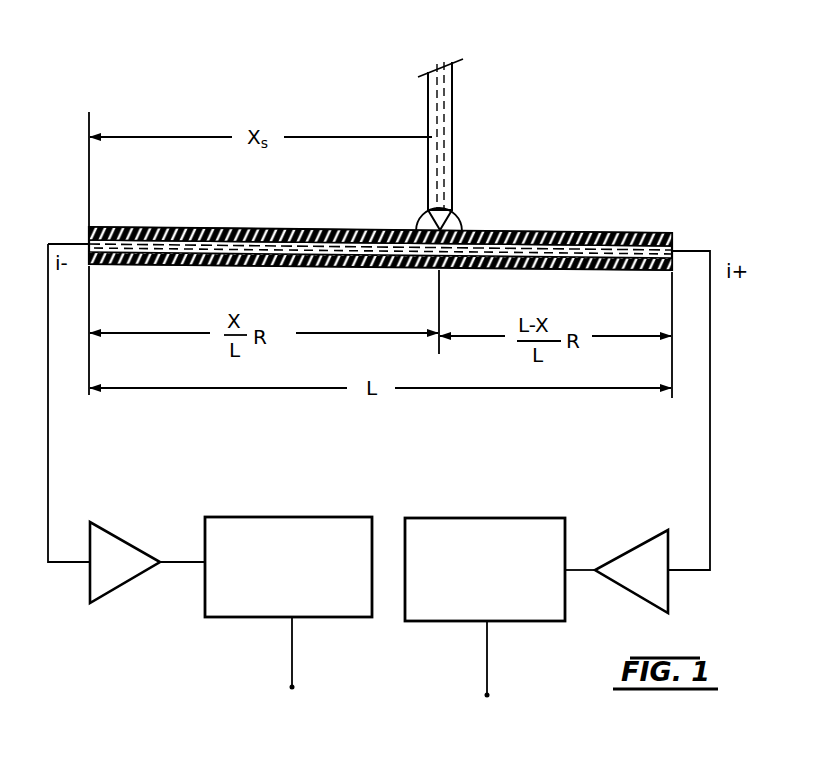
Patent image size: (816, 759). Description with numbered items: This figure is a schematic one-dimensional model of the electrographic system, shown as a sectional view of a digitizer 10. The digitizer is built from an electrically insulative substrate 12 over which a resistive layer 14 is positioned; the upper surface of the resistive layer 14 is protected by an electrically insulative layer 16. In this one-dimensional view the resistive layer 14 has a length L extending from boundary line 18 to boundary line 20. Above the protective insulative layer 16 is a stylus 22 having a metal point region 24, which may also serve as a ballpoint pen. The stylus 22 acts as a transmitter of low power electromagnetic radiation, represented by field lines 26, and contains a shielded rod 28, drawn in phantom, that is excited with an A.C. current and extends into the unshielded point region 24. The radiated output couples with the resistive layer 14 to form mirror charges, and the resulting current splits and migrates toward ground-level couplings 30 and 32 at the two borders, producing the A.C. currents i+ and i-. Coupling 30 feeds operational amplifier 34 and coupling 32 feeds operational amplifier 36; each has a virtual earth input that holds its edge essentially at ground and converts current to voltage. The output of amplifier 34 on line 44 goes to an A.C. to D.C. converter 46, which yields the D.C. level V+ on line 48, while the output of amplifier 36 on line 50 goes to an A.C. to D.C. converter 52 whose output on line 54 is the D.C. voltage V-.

The digitizer 10 is at (630, 199).
The electrically insulative substrate 12 is at (281, 266).
The resistive layer 14 is at (87, 240).
The electrically insulative layer 16 is at (117, 227).
The boundary line 18 is at (92, 290).
The boundary line 20 is at (670, 286).
The stylus 22 is at (452, 101).
The point region 24 is at (446, 213).
The field lines 26 is at (460, 224).
The shielded rod 28 is at (439, 80).
The coupling 30 is at (677, 410).
The coupling 32 is at (48, 480).
The operational amplifier 34 is at (632, 547).
The operational amplifier 36 is at (124, 542).
The line 44 is at (583, 572).
The A.C. to D.C. converter 46 is at (487, 518).
The line 48 is at (487, 665).
The line 50 is at (185, 564).
The A.C. to D.C. converter 52 is at (301, 517).
The line 54 is at (292, 662).